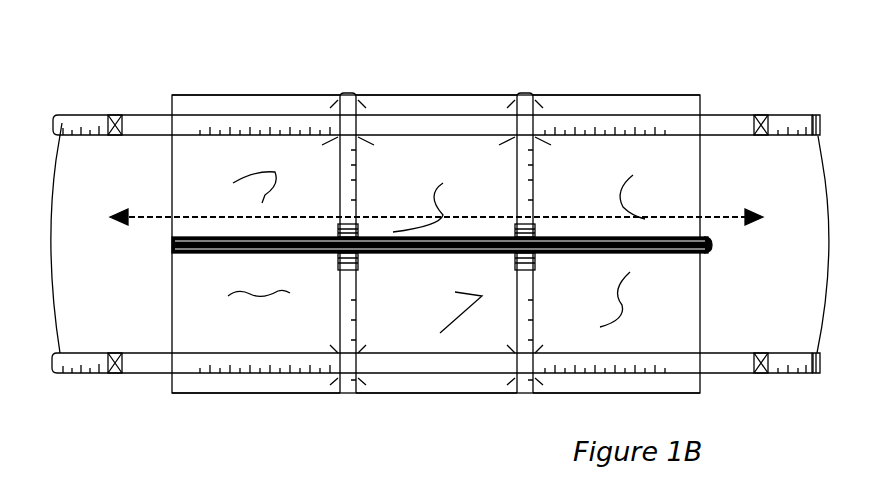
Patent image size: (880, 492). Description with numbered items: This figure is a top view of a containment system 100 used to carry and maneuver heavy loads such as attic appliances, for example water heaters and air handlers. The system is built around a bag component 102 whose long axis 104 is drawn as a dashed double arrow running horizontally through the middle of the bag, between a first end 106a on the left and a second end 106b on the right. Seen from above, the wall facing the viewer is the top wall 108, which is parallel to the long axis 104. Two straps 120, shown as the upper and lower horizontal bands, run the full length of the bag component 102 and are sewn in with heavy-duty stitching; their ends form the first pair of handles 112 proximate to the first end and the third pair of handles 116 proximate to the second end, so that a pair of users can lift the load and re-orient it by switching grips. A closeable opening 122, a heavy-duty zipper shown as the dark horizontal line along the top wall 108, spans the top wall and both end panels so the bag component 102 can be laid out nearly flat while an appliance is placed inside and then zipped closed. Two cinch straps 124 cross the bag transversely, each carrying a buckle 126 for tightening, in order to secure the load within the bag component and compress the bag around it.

The containment system 100 is at (775, 55).
The bag component 102 is at (430, 402).
The long axis 104 is at (757, 223).
The first end 106a is at (216, 84).
The second end 106b is at (671, 86).
The top wall 108 is at (479, 244).
The first pair of handles 112 is at (50, 238).
The third pair of handles 116 is at (835, 244).
The strap 120 is at (162, 123).
The closeable opening 122 is at (430, 251).
The cinch strap 124 is at (352, 112).
The buckle 126 is at (345, 243).